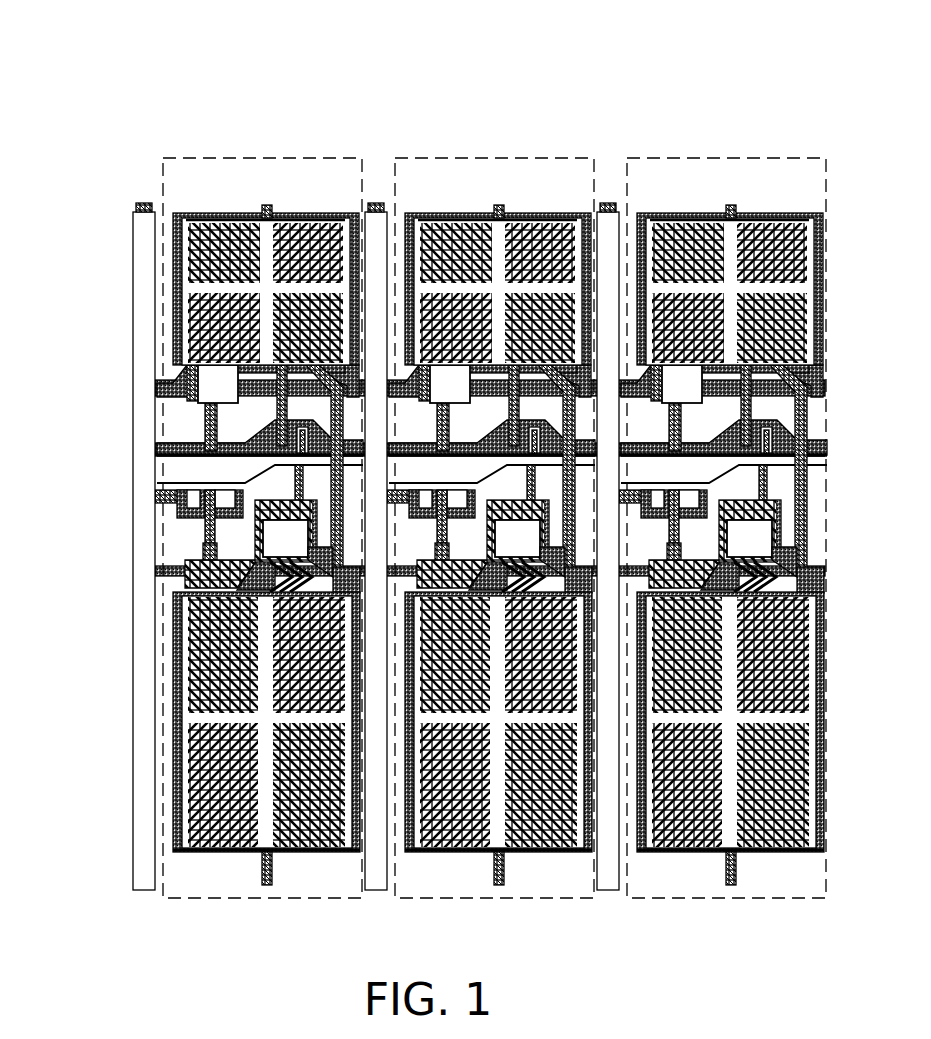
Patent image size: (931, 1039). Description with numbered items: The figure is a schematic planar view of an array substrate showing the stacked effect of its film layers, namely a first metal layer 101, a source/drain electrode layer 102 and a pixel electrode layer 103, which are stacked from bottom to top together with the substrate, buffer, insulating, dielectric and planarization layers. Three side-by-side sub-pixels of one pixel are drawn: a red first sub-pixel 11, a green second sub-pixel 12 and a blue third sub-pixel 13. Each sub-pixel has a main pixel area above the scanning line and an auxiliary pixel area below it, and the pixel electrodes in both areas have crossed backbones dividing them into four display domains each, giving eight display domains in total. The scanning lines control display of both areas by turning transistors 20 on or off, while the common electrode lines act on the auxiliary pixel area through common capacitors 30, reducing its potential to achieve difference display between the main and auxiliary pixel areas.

The first sub-pixel 11 is at (200, 476).
The second sub-pixel 12 is at (515, 158).
The third sub-pixel 13 is at (745, 158).
The first metal layer 101 is at (157, 388).
The source/drain electrode layer 102 is at (160, 571).
The pixel electrode layer 103 is at (145, 318).
The transistor 20 is at (200, 451).
The common capacitor 30 is at (263, 433).